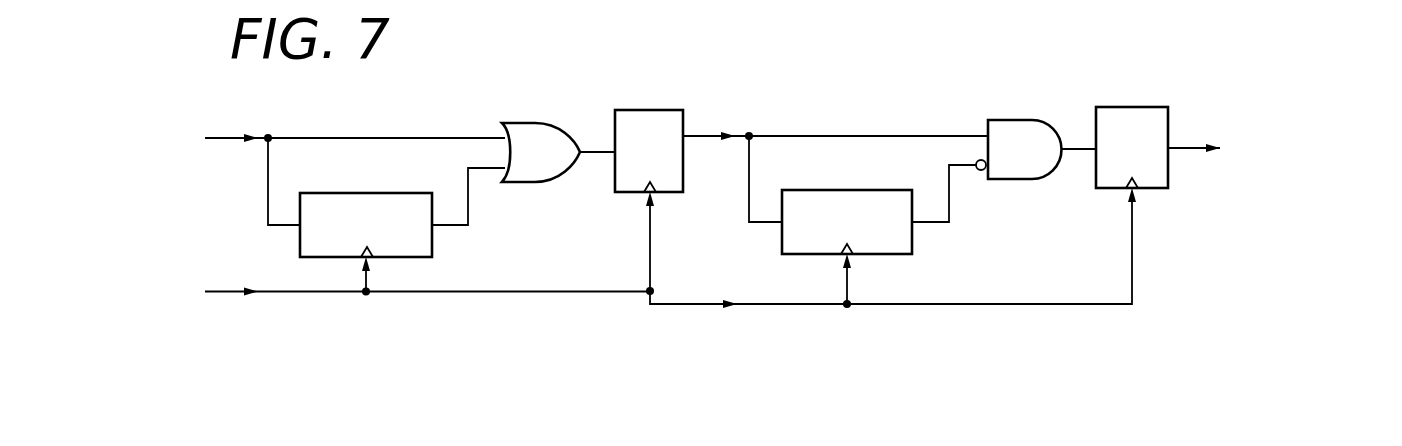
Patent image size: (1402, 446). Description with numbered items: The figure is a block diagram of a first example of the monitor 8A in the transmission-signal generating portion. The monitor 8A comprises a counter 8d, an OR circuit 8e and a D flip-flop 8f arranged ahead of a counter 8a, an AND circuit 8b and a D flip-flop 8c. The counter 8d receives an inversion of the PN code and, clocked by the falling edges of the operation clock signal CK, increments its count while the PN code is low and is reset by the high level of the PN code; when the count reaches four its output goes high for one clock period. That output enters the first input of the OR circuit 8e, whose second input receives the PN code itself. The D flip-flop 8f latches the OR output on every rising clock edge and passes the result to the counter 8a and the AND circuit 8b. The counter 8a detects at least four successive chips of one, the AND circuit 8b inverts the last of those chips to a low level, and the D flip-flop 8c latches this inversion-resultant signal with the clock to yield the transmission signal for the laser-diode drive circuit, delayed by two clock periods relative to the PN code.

The monitor 8A is at (911, 74).
The counter 8a is at (867, 190).
The AND circuit 8b is at (1023, 120).
The D flip-flop 8c is at (1138, 107).
The counter 8d is at (385, 193).
The OR circuit 8e is at (540, 123).
The D flip-flop 8f is at (657, 110).